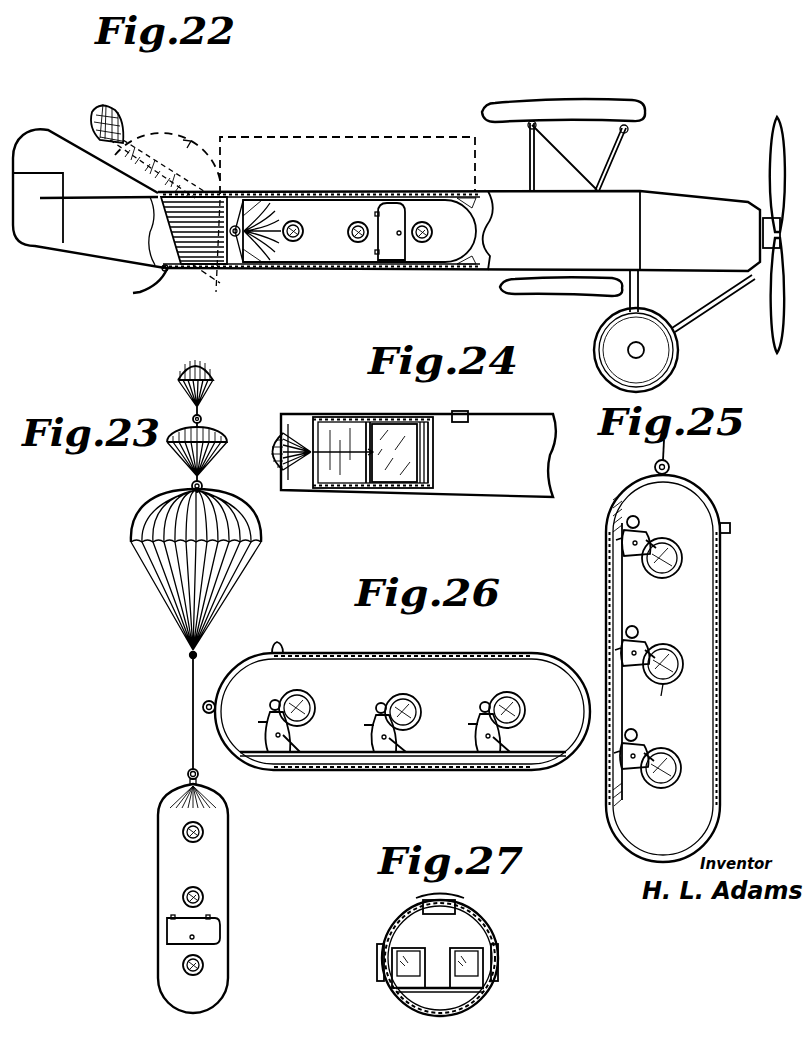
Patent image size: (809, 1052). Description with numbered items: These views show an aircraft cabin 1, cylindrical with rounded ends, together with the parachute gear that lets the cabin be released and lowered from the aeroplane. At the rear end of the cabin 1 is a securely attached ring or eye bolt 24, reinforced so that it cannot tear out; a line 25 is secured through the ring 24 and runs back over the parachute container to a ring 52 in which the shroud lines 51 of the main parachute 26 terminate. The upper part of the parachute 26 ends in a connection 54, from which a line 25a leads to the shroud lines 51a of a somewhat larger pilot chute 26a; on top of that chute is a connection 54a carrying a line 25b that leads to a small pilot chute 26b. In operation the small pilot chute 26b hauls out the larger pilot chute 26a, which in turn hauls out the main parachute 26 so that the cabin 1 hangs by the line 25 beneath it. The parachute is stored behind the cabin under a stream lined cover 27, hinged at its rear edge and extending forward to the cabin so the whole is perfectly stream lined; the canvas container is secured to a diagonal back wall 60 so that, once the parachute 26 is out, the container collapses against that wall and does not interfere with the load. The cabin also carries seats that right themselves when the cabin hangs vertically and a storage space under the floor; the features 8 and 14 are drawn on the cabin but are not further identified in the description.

In FIG. 23, the cabin 1 is at (228, 914).
In FIG. 25, the cabin 1 is at (720, 668).
In FIG. 26, the cabin 1 is at (403, 658).
In FIG. 27, the cabin 1 is at (491, 939).
In FIG. 27, the hatch cover 8 is at (453, 908).
In FIG. 22, the porthole window 14 is at (297, 238).
In FIG. 23, the porthole window 14 is at (197, 890).
In FIG. 25, the porthole window 14 is at (666, 748).
In FIG. 26, the porthole window 14 is at (420, 700).
In FIG. 22, the ring or eye bolt 24 is at (237, 226).
In FIG. 23, the ring or eye bolt 24 is at (187, 772).
In FIG. 25, the ring or eye bolt 24 is at (673, 468).
In FIG. 26, the ring or eye bolt 24 is at (222, 688).
In FIG. 23, the line 25 is at (190, 723).
In FIG. 25, the line 25 is at (657, 465).
In FIG. 23, the line 25a is at (203, 485).
In FIG. 23, the line 25b is at (194, 415).
In FIG. 23, the main parachute 26 is at (137, 530).
In FIG. 23, the large pilot chute 26a is at (215, 442).
In FIG. 22, the small pilot chute 26b is at (133, 101).
In FIG. 23, the small pilot chute 26b is at (213, 353).
In FIG. 24, the small pilot chute 26b is at (281, 472).
In FIG. 24, the stream lined cover 27 is at (353, 470).
In FIG. 23, the shroud lines 51 is at (170, 586).
In FIG. 23, the shroud lines 51a is at (180, 452).
In FIG. 23, the ring 52 is at (188, 656).
In FIG. 23, the connection 54 is at (191, 488).
In FIG. 23, the connection 54a is at (202, 418).
In FIG. 22, the diagonal back wall 60 is at (165, 234).